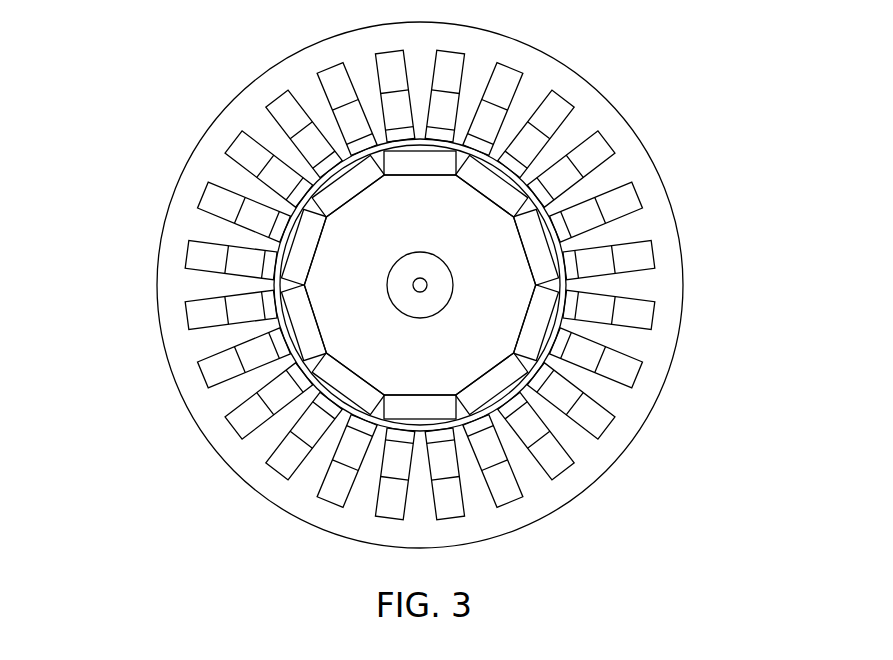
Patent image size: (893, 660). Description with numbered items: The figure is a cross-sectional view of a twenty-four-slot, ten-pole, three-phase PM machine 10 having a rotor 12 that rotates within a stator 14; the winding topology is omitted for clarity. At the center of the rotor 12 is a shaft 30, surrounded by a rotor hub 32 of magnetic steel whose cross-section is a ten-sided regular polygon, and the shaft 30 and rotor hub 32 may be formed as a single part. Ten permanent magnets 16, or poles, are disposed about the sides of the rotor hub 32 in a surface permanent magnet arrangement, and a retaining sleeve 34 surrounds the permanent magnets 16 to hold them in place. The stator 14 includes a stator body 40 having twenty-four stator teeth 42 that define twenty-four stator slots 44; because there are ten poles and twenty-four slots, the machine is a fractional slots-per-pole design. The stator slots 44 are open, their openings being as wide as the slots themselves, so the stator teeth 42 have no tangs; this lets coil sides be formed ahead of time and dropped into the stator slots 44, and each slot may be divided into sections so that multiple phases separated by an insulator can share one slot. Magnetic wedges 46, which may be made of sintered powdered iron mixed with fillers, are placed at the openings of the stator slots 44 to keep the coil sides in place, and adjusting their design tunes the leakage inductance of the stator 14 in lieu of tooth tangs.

The PM machine 10 is at (176, 86).
The rotor 12 is at (330, 331).
The stator 14 is at (413, 285).
The permanent magnets 16 is at (318, 392).
The shaft 30 is at (402, 293).
The rotor hub 32 is at (342, 330).
The retaining sleeve 34 is at (340, 383).
The stator body 40 is at (672, 207).
The stator teeth 42 is at (603, 398).
The stator slots 44 is at (620, 363).
The magnetic wedges 46 is at (560, 442).